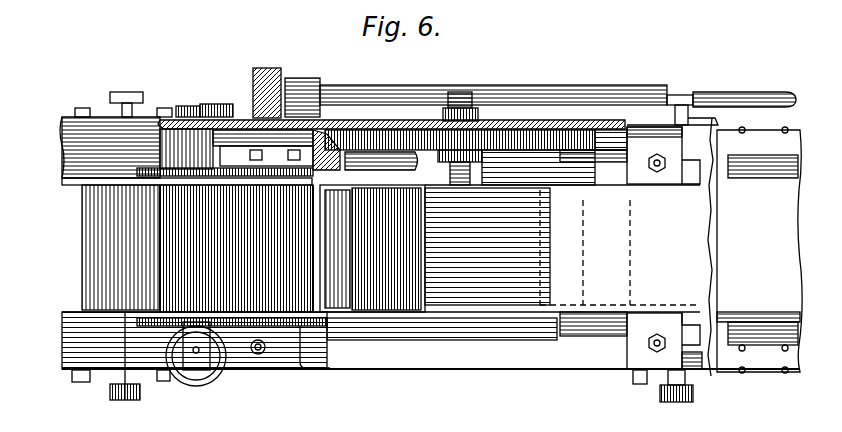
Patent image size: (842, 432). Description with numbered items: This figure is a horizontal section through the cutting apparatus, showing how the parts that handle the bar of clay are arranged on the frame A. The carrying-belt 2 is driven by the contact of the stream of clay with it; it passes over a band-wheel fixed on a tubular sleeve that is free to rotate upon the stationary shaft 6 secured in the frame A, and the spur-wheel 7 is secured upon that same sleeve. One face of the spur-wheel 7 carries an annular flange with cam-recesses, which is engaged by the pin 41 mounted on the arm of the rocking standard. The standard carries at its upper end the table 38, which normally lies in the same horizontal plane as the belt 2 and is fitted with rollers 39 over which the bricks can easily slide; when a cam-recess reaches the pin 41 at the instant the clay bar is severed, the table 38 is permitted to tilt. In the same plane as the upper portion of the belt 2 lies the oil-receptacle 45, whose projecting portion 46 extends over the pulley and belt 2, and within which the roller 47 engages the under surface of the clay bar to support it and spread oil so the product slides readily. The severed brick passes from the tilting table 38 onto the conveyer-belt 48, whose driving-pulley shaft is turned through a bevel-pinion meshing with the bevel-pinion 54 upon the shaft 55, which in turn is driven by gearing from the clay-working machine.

The carrying-belt 2 is at (751, 250).
The stationary shaft 6 is at (463, 112).
The spur-wheel 7 is at (530, 135).
The table 38 is at (306, 271).
The rollers 39 is at (297, 316).
The pin 41 is at (396, 160).
The oil-receptacle 45 is at (378, 312).
The projecting portion 46 is at (424, 280).
The roller 47 is at (366, 306).
The conveyer-belt 48 is at (121, 247).
The bevel-pinion 54 is at (283, 82).
The shaft 55 is at (776, 91).
The frame A is at (431, 356).